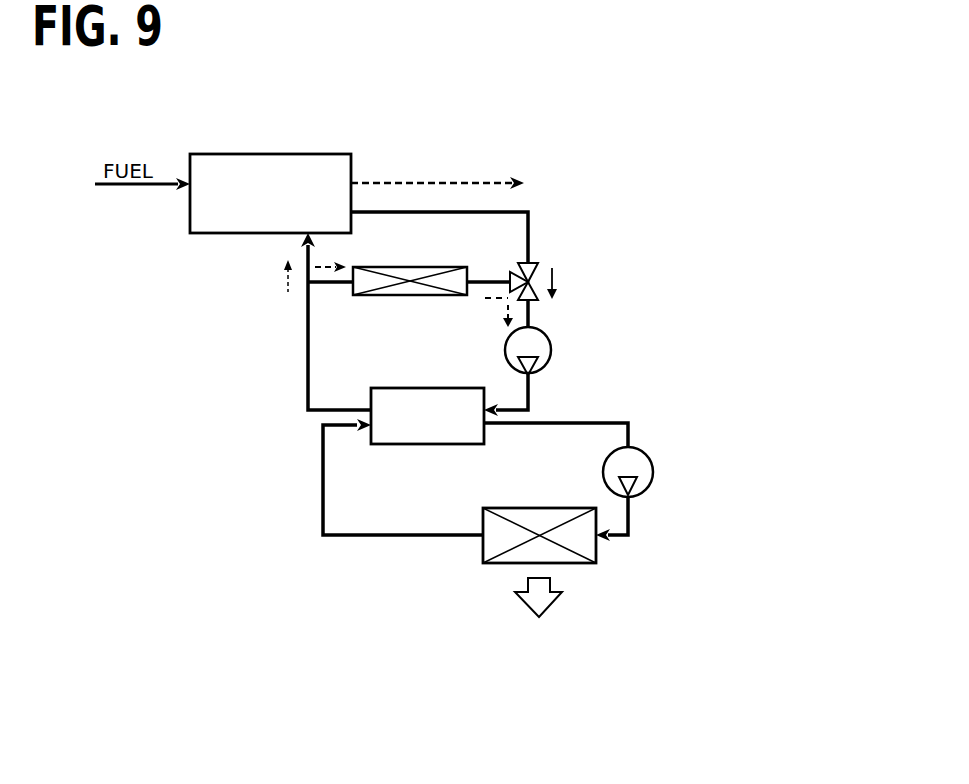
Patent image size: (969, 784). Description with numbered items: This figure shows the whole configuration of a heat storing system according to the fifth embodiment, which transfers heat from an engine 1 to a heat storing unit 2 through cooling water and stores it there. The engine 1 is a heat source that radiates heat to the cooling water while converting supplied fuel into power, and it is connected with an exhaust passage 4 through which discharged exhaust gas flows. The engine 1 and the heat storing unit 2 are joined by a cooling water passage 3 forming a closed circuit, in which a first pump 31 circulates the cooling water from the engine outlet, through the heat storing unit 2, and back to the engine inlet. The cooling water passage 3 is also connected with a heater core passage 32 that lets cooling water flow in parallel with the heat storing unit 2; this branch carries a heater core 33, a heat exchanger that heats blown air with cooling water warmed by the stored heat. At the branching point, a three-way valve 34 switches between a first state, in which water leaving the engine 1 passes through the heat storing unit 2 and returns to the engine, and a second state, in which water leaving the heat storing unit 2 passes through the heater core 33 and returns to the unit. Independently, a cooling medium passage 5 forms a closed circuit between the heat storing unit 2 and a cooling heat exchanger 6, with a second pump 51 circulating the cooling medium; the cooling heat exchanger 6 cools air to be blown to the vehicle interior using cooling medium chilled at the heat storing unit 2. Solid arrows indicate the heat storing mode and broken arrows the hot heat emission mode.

The engine 1 is at (228, 153).
The heat storing unit 2 is at (425, 447).
The cooling water passage 3 is at (308, 355).
The exhaust passage 4 is at (423, 180).
The cooling medium passage 5 is at (322, 487).
The cooling heat exchanger 6 is at (483, 550).
The first pump 31 is at (551, 350).
The heater core passage 32 is at (330, 286).
The heater core 33 is at (410, 297).
The three-way valve 34 is at (538, 267).
The second pump 51 is at (655, 470).